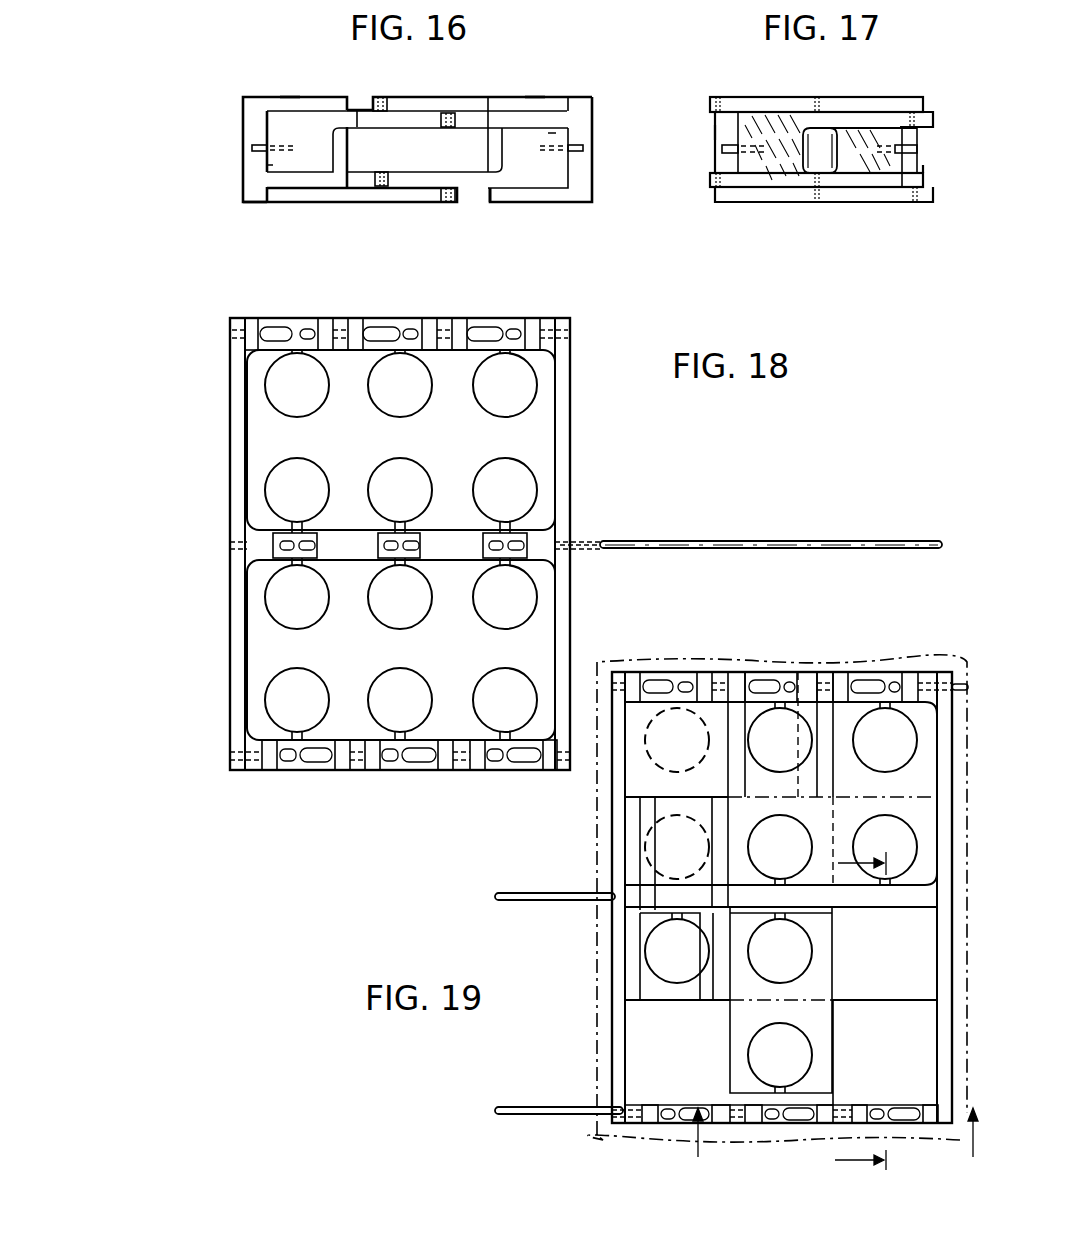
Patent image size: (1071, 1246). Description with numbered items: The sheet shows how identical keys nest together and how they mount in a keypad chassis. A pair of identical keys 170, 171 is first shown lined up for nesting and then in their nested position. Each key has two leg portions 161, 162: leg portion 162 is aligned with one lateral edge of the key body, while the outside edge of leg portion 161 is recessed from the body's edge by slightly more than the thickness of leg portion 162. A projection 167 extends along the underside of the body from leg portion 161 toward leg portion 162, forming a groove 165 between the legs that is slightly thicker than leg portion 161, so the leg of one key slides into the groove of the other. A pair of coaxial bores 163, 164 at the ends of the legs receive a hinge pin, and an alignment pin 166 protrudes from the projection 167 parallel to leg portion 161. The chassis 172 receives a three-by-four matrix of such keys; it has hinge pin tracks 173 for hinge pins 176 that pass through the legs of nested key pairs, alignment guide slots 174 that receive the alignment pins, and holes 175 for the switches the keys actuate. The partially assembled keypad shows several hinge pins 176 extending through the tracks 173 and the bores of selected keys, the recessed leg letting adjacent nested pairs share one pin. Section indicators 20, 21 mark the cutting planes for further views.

In FIG. 16, the leg portion 161 is at (357, 117).
In FIG. 17, the leg portion 161 is at (838, 113).
In FIG. 16, the leg portion 162 is at (453, 95).
In FIG. 17, the leg portion 162 is at (773, 102).
In FIG. 16, the bore 163 is at (387, 182).
In FIG. 17, the bore 163 is at (913, 120).
In FIG. 16, the bore 164 is at (383, 107).
In FIG. 17, the bore 164 is at (732, 80).
In FIG. 16, the groove 165 is at (563, 118).
In FIG. 16, the alignment pin 166 is at (260, 147).
In FIG. 17, the alignment pin 166 is at (722, 152).
In FIG. 16, the projection 167 is at (555, 135).
In FIG. 17, the projection 167 is at (852, 137).
In FIG. 16, the key 170 is at (288, 97).
In FIG. 17, the key 170 is at (715, 132).
In FIG. 16, the key 171 is at (533, 95).
In FIG. 17, the key 171 is at (923, 170).
In FIG. 18, the chassis 172 is at (575, 464).
In FIG. 19, the chassis 172 is at (777, 898).
In FIG. 18, the hinge pin track 173 is at (230, 333).
In FIG. 18, the alignment guide slot 174 is at (505, 340).
In FIG. 18, the hole 175 is at (482, 463).
In FIG. 19, the hole 175 is at (781, 897).
In FIG. 18, the hinge pin 176 is at (718, 539).
In FIG. 19, the hinge pin 176 is at (575, 892).
In FIG. 19, the section line 20- 20 is at (867, 1015).
In FIG. 19, the section line 21- 21 is at (835, 1153).